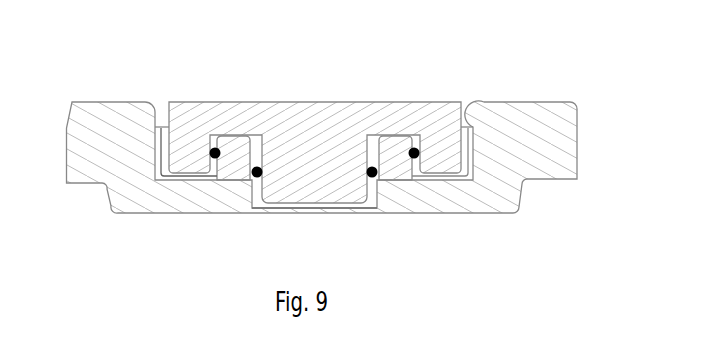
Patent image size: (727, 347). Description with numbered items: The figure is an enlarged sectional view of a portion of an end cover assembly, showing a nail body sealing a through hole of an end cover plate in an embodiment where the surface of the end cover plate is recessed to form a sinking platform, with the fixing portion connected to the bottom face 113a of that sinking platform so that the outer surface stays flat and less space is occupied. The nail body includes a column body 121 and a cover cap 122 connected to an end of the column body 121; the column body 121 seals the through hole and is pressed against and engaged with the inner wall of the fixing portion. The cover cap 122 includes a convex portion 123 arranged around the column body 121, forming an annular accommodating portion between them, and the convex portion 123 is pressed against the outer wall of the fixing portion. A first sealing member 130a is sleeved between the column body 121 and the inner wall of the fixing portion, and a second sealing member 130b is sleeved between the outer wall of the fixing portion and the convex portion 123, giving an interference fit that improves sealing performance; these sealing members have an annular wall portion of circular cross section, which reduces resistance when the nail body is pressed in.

The column body 121 is at (315, 188).
The cover cap 122 is at (316, 116).
The convex portion 123 is at (447, 147).
The bottom face of the sinking platform 113a is at (447, 190).
The first sealing member 130a is at (256, 178).
The second sealing member 130b is at (214, 147).